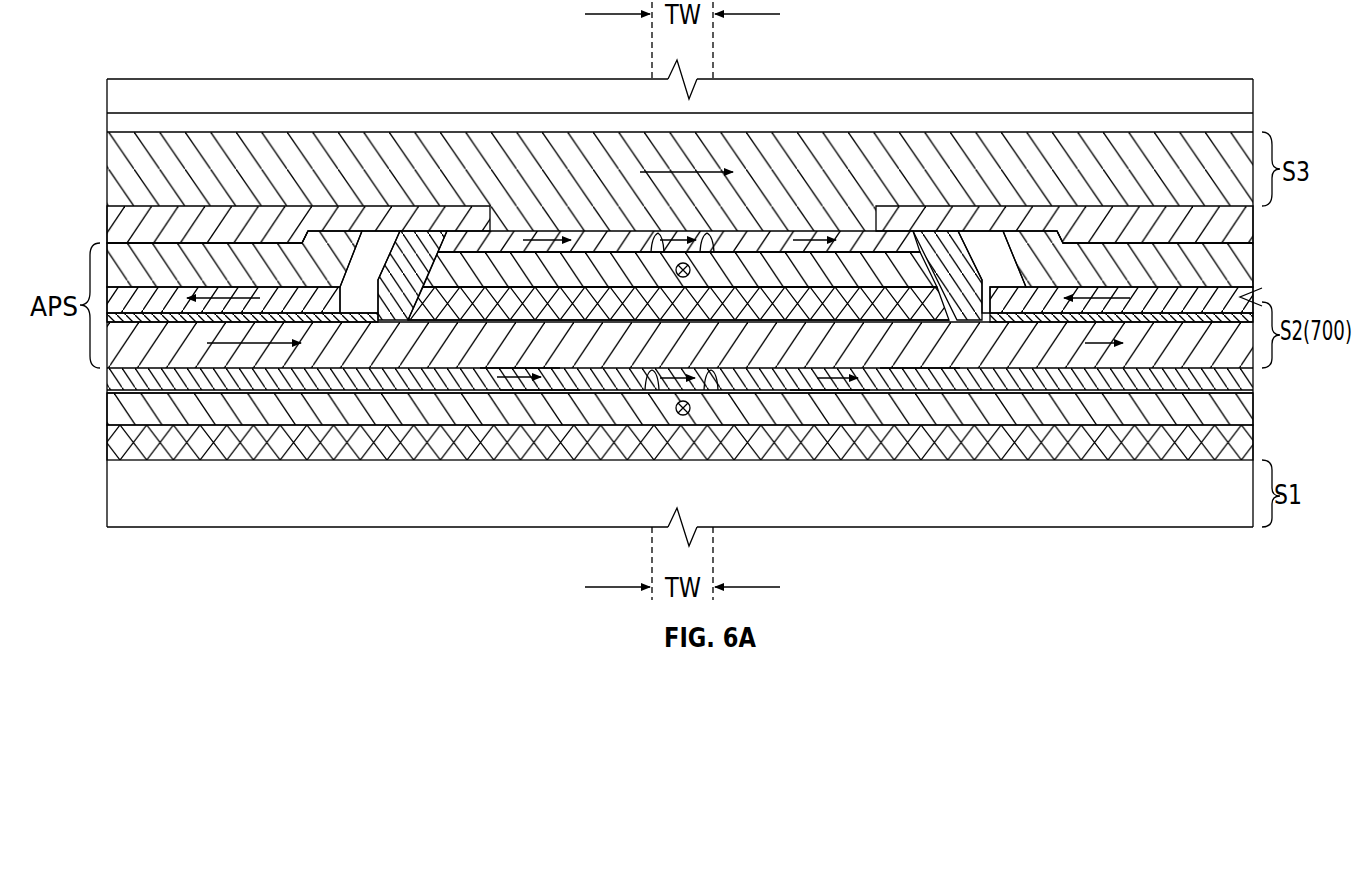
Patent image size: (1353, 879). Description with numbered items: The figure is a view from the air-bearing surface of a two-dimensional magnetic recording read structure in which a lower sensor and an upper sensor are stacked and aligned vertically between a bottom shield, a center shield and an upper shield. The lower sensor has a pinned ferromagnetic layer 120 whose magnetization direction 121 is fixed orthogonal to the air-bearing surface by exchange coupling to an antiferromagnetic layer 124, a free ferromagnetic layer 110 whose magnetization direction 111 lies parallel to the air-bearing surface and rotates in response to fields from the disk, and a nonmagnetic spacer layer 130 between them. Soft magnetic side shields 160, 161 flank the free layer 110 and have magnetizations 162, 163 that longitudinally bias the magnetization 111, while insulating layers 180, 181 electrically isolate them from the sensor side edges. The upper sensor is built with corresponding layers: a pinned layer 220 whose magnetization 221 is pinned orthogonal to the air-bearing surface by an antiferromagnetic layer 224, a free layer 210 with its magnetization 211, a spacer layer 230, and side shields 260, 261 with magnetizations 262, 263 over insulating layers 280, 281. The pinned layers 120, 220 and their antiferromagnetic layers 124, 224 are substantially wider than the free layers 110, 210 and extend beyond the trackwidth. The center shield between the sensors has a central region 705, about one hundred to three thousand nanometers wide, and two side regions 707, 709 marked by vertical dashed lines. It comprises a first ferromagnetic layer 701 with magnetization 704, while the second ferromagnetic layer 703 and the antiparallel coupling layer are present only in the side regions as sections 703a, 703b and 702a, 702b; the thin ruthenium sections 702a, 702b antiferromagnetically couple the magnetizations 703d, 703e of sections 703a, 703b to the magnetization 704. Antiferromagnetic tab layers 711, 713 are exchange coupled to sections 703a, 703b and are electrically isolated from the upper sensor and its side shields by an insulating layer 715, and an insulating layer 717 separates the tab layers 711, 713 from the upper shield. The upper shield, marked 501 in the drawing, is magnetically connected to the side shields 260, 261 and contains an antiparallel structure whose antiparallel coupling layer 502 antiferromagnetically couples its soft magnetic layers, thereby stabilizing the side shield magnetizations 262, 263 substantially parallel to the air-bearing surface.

The antiparallel coupling layer 502 is at (1255, 128).
The light direction arrow 501 is at (658, 172).
The insulating layer 717 is at (118, 218).
The AF tab layer 711 is at (118, 250).
The AF tab layer 713 is at (1250, 258).
The second ferromagnetic layer 703 is at (190, 240).
The side section of second ferromagnetic layer 703a is at (232, 298).
The side section of second ferromagnetic layer 703b is at (1198, 300).
The magnetization 703d is at (344, 230).
The magnetization 703e is at (1138, 240).
The electrically insulating layer 715 is at (421, 235).
The side shield 260 is at (498, 240).
The magnetization 262 is at (573, 240).
The side shield 261 is at (756, 240).
The magnetization 263 is at (826, 237).
The first gate sidewall 211 is at (658, 232).
The free layer 210 is at (699, 233).
The pinned layer 220 is at (587, 281).
The insulating layer 280 is at (556, 265).
The insulating layer 281 is at (795, 258).
The buffer layer 230 is at (678, 305).
The magnetization 221 is at (722, 290).
The antiferromagnetic layer 224 is at (590, 303).
The magnetization 704 is at (243, 343).
The APC layer section 702a is at (204, 345).
The side region 707 is at (329, 357).
The central region 705 is at (771, 352).
The APC layer section 702b is at (1013, 323).
The side region 709 is at (1185, 359).
The first ferromagnetic layer 701 is at (120, 353).
The side shield 160 is at (480, 363).
The magnetization 162 is at (533, 380).
The nonmagnetic spacer layer 130 is at (650, 370).
The magnetization direction 111 is at (683, 372).
The free ferromagnetic layer 110 is at (709, 371).
The magnetization 163 is at (838, 375).
The side shield 161 is at (915, 373).
The insulating layer 180 is at (540, 385).
The insulating layer 181 is at (830, 385).
The pinned ferromagnetic layer 120 is at (600, 410).
The magnetization direction 121 is at (681, 414).
The antiferromagnetic layer 124 is at (188, 455).